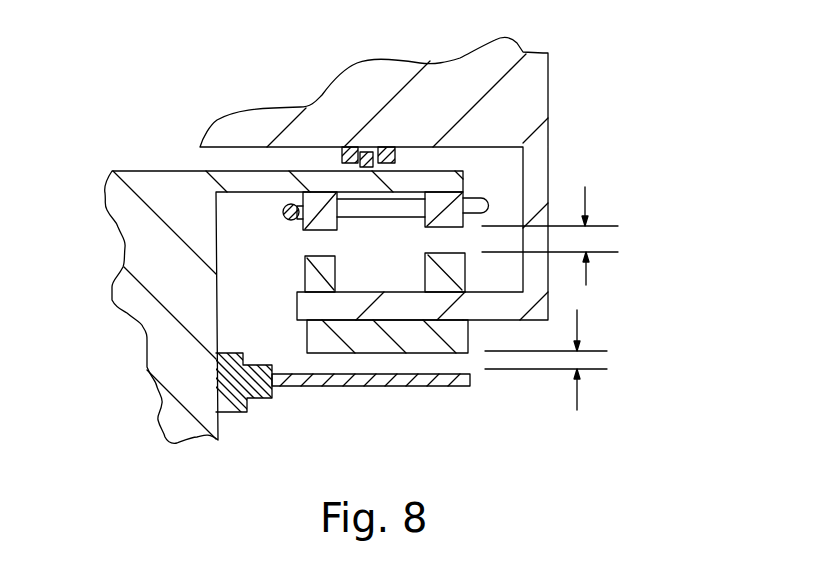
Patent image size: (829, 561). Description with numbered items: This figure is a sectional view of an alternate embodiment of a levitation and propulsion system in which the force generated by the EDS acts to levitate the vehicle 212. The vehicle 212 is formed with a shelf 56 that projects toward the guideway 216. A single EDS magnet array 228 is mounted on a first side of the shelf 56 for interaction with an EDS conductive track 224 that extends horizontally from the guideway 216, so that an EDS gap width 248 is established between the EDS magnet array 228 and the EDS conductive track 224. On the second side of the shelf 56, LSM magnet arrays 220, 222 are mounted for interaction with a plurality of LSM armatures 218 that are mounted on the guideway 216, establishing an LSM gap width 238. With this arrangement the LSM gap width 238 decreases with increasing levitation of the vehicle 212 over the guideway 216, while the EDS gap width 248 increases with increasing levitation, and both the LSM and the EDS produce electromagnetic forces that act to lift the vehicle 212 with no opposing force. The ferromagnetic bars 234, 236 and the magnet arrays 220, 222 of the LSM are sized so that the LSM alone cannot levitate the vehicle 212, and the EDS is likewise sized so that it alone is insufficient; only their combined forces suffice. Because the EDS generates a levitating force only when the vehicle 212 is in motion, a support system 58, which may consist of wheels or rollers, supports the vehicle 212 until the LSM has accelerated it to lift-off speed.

The vehicle 212 is at (548, 88).
The support system 58 is at (407, 146).
The guideway 216 is at (137, 222).
The LSM armatures 218 is at (321, 193).
The ferromagnetic bar 234 is at (301, 241).
The ferromagnetic bar 236 is at (437, 192).
The LSM magnet array 220 is at (305, 275).
The LSM magnet array 222 is at (425, 280).
The shelf 56 is at (297, 312).
The EDS magnet array 228 is at (306, 342).
The EDS conductive track 224 is at (325, 388).
The LSM gap width 238 is at (585, 192).
The EDS gap width 248 is at (577, 313).